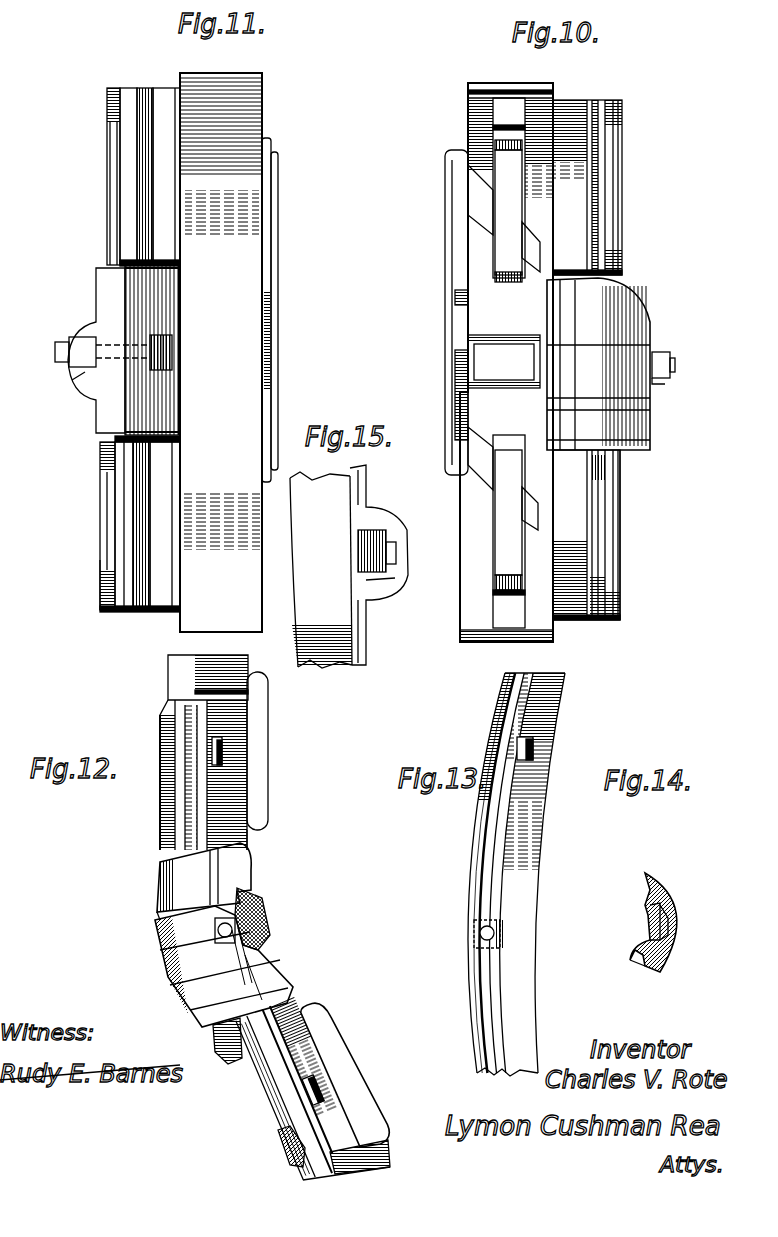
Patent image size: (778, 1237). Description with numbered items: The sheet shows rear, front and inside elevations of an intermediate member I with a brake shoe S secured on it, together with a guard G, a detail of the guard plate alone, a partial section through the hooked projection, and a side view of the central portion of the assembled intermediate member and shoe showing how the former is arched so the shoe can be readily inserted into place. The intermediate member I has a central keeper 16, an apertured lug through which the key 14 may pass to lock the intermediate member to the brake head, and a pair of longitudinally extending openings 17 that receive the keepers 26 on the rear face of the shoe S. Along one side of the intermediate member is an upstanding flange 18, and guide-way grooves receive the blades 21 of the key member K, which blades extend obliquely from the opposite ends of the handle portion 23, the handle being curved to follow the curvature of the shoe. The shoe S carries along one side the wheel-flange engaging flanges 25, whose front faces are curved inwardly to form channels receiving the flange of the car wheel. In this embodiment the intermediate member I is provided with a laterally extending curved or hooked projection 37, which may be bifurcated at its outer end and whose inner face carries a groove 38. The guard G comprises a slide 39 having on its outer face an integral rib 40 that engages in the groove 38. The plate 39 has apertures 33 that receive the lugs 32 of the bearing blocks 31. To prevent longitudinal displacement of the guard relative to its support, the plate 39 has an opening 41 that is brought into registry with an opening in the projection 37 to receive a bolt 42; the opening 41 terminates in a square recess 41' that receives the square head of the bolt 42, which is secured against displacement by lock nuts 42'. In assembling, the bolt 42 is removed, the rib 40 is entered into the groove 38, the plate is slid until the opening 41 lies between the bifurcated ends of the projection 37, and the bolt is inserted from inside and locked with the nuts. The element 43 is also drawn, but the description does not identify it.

In FIG. 10, the key 14 is at (640, 300).
In FIG. 10, the central keeper 16 is at (504, 361).
In FIG. 15, the central keeper 16 is at (358, 552).
In FIG. 10, the longitudinal openings 17 is at (498, 275).
In FIG. 11, the upstanding flange 18 is at (272, 358).
In FIG. 10, the upstanding flange 18 is at (455, 395).
In FIG. 10, the blades 21 is at (480, 205).
In FIG. 10, the handle portion 23 is at (448, 360).
In FIG. 11, the wheel-flange engaging flanges 25 is at (154, 225).
In FIG. 10, the wheel-flange engaging flanges 25 is at (575, 105).
In FIG. 10, the keepers 26 is at (505, 245).
In FIG. 11, the bearing blocks 31 is at (128, 197).
In FIG. 10, the bearing blocks 31 is at (600, 212).
In FIG. 12, the bearing blocks 31 is at (258, 703).
In FIG. 12, the lugs 32 is at (235, 762).
In FIG. 12, the apertures 33 is at (223, 740).
In FIG. 13, the apertures 33 is at (533, 745).
In FIG. 11, the hooked projection 37 is at (96, 312).
In FIG. 10, the hooked projection 37 is at (598, 364).
In FIG. 12, the hooked projection 37 is at (165, 880).
In FIG. 14, the hooked projection 37 is at (672, 878).
In FIG. 14, the groove 38 is at (672, 925).
In FIG. 11, the slide 39 is at (112, 460).
In FIG. 10, the slide 39 is at (612, 240).
In FIG. 12, the slide 39 is at (262, 972).
In FIG. 13, the slide 39 is at (522, 965).
In FIG. 14, the slide 39 is at (655, 903).
In FIG. 11, the rib 40 is at (107, 246).
In FIG. 10, the rib 40 is at (615, 262).
In FIG. 12, the rib 40 is at (203, 823).
In FIG. 13, the rib 40 is at (492, 982).
In FIG. 14, the rib 40 is at (680, 945).
In FIG. 13, the opening 41 is at (460, 934).
In FIG. 11, the square recess 41' is at (101, 342).
In FIG. 13, the square recess 41' is at (532, 933).
In FIG. 11, the bolt 42 is at (49, 352).
In FIG. 10, the bolt 42 is at (679, 365).
In FIG. 12, the bolt 42 is at (265, 931).
In FIG. 11, the lock nuts 42' is at (53, 387).
In FIG. 10, the lock nuts 42' is at (679, 390).
In FIG. 12, the lock nuts 42' is at (275, 919).
In FIG. 15, the bushing 43 is at (375, 588).
In FIG. 12, the bushing 43 is at (195, 905).
In FIG. 11, the brake shoe S is at (221, 352).
In FIG. 15, the brake shoe S is at (321, 570).
In FIG. 12, the brake shoe S is at (220, 672).
In FIG. 10, the intermediate member I is at (468, 103).
In FIG. 15, the intermediate member I is at (380, 600).
In FIG. 12, the intermediate member I is at (180, 695).
In FIG. 11, the key member K is at (280, 322).
In FIG. 10, the key member K is at (445, 325).
In FIG. 11, the guard G is at (100, 565).
In FIG. 10, the guard G is at (622, 476).
In FIG. 12, the guard G is at (252, 835).